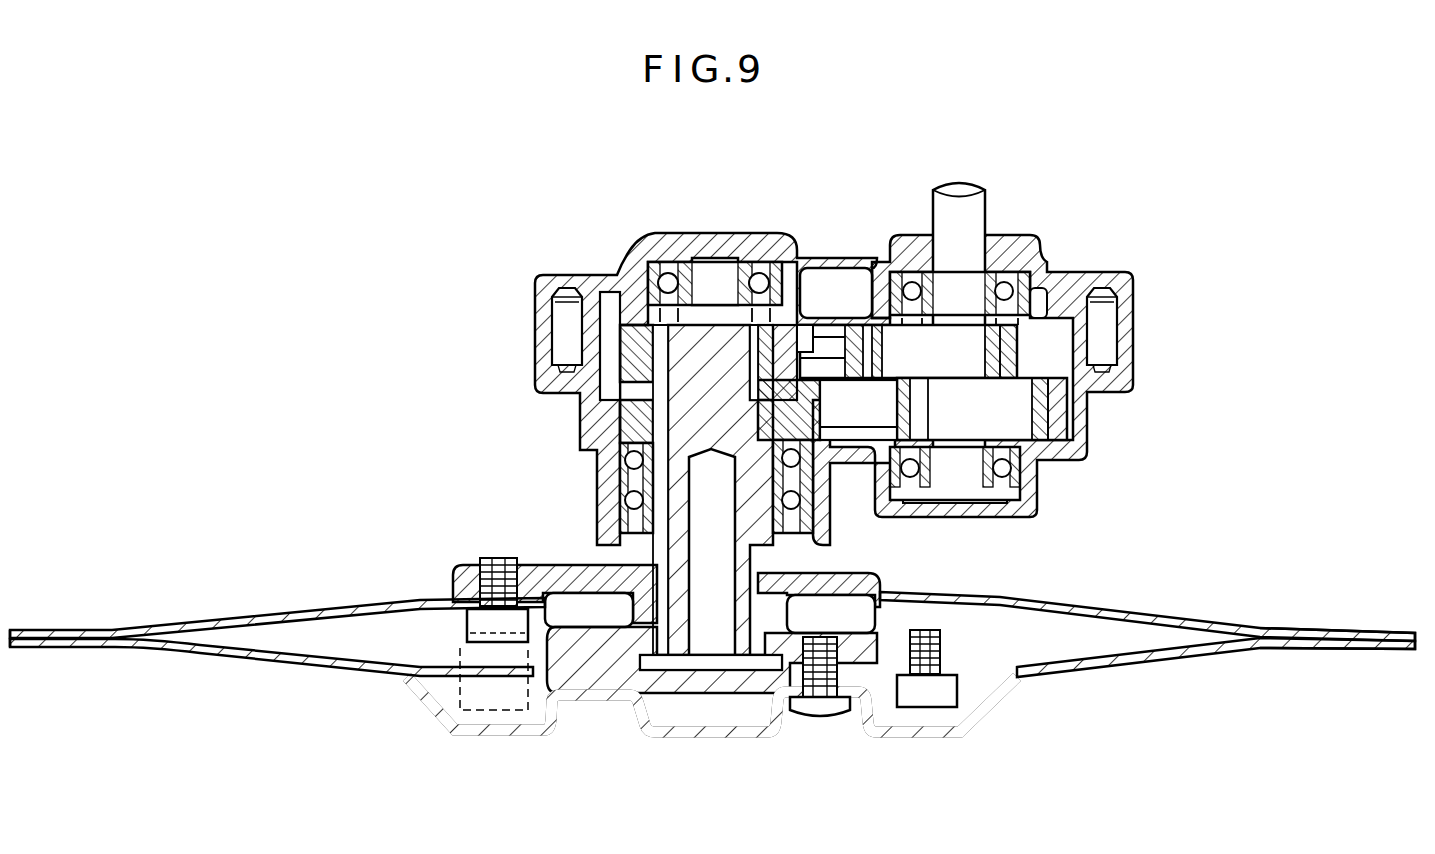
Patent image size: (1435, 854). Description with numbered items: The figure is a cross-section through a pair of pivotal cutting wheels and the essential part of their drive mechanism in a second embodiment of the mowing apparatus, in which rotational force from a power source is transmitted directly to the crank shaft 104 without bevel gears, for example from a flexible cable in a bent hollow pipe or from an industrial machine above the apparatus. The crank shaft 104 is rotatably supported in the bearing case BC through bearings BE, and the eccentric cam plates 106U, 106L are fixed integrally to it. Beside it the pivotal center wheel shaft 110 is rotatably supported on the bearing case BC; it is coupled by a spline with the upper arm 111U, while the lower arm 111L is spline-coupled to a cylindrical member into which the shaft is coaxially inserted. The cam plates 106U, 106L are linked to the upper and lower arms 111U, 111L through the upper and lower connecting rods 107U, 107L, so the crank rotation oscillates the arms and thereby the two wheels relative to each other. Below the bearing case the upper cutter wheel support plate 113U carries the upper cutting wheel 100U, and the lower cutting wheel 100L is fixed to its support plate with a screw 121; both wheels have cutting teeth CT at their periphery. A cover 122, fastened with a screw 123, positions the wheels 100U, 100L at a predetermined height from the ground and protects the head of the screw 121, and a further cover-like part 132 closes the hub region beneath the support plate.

The bearing case BC is at (830, 258).
The crank shaft 104 is at (967, 220).
The eccentric cam plate 106U is at (900, 342).
The eccentric cam plate 106L is at (1020, 408).
The upper connecting rod 107U is at (833, 352).
The lower connecting rod 107L is at (850, 412).
The pivotal center wheel shaft 110 is at (687, 362).
The upper arm 111U is at (616, 275).
The lower arm 111L is at (600, 413).
The bearings BE is at (1030, 282).
The upper cutter wheel support plate 113U is at (568, 572).
The upper cutting wheel 100U is at (1141, 612).
The lower cutting wheel 100L is at (1128, 664).
The cutting teeth CT is at (1320, 630).
The cover 132 is at (588, 655).
The cover 122 is at (927, 738).
The screw 123 is at (820, 714).
The screw 121 is at (943, 690).